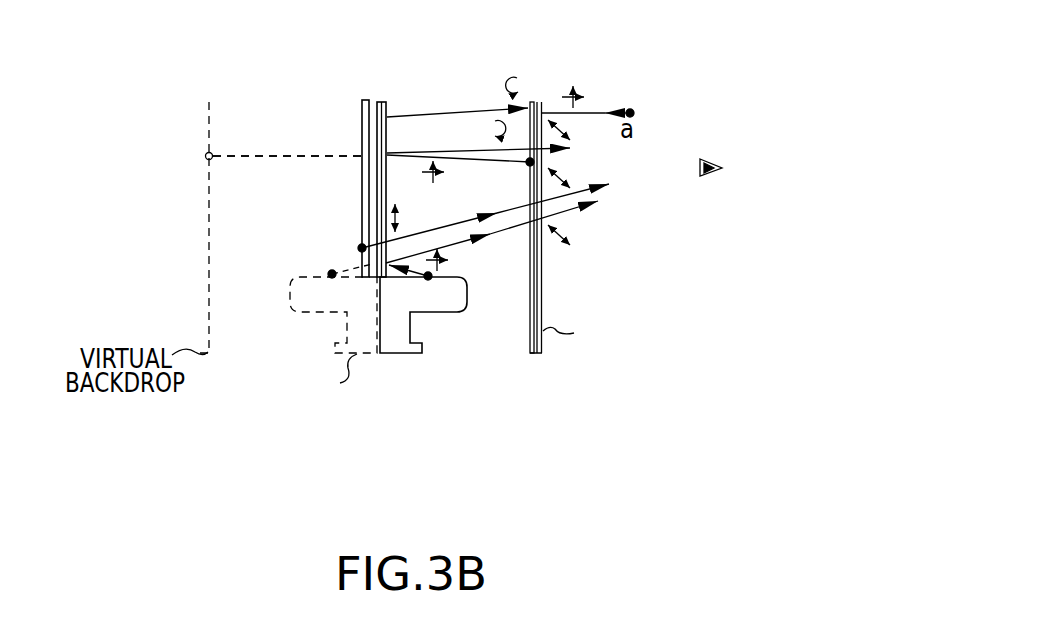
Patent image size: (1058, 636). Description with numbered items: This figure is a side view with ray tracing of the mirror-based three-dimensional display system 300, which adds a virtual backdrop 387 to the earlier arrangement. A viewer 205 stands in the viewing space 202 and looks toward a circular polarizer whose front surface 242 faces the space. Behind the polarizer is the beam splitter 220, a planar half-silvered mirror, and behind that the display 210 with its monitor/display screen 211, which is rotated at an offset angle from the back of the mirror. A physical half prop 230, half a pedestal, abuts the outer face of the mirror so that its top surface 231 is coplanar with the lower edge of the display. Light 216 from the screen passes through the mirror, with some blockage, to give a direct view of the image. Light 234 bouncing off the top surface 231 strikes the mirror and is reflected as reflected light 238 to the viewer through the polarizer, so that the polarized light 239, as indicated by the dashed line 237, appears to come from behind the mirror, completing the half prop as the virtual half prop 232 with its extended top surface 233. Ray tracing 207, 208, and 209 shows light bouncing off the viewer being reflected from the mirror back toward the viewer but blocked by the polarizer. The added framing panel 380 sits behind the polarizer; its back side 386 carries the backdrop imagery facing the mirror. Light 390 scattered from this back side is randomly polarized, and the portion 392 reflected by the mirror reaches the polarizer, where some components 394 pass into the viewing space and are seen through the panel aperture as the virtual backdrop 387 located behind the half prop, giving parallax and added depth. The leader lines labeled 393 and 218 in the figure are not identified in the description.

The virtual backdrop 387 is at (209, 102).
The display 210 is at (365, 100).
The beam splitter 220 is at (378, 102).
The ray tracing 209 is at (476, 111).
The front surface of polarizer 242 is at (538, 104).
The mirror-based 3D display system 300 is at (678, 86).
The monitor/display screen 211 is at (362, 155).
The ray tracing 208 is at (442, 115).
The reflected portion of randomly polarized light 392 is at (436, 152).
The ray tracing 207 is at (545, 158).
The virtual image path 393 is at (240, 156).
The scattered light 390 is at (466, 158).
The passed light components 394 is at (548, 156).
The viewer 205 is at (740, 152).
The dashed line 237 is at (355, 250).
The light output from display screen 216 is at (432, 228).
The light ray from half-prop 218 is at (604, 186).
The extended top surface 233 is at (328, 274).
The top surface of half prop 231 is at (453, 267).
The polarized light 239 is at (566, 212).
The light bouncing off half prop 234 is at (402, 278).
The reflected light 238 is at (514, 215).
The virtual half prop 232 is at (284, 322).
The viewing space 202 is at (878, 334).
The back side of panel 386 is at (530, 326).
The framing panel 380 is at (536, 354).
The physical half prop 230 is at (407, 354).